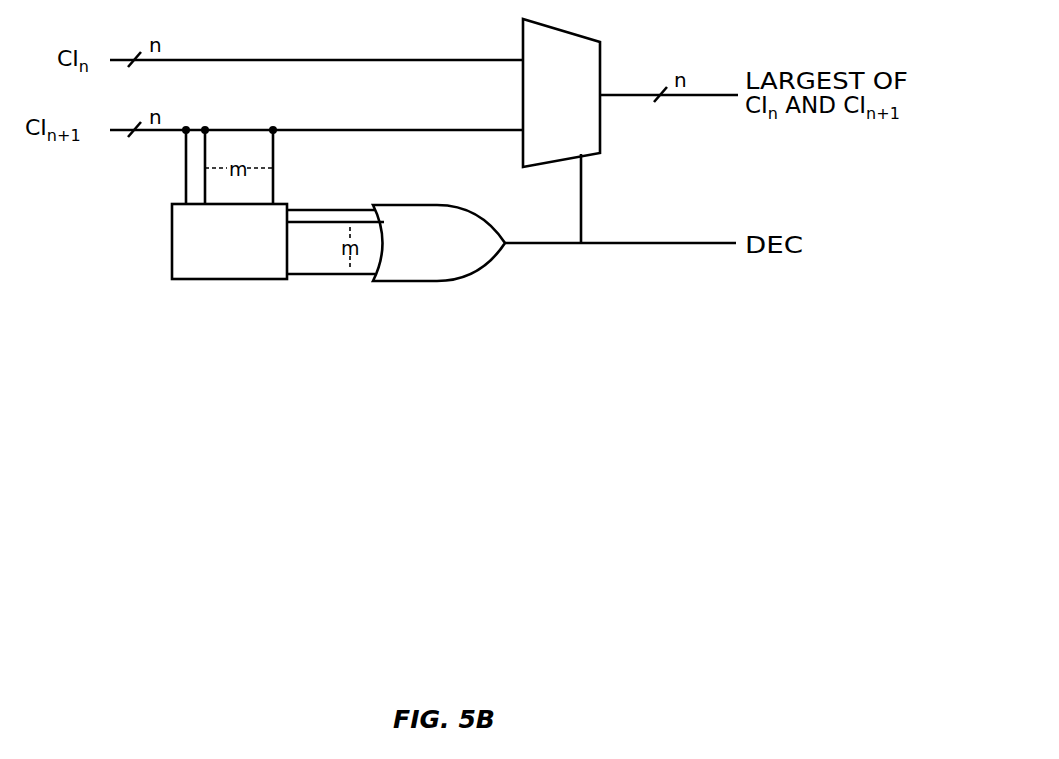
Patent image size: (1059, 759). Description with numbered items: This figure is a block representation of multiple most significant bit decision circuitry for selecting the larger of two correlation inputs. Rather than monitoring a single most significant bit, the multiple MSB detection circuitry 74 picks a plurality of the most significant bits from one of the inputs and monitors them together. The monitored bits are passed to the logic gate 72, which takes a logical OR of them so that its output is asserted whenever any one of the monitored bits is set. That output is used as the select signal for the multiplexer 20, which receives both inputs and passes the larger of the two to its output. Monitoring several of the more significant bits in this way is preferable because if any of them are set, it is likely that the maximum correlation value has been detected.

The multiplexer 20 is at (581, 106).
The logic gate 72 is at (456, 254).
The multiple MSB detection circuitry 74 is at (205, 279).